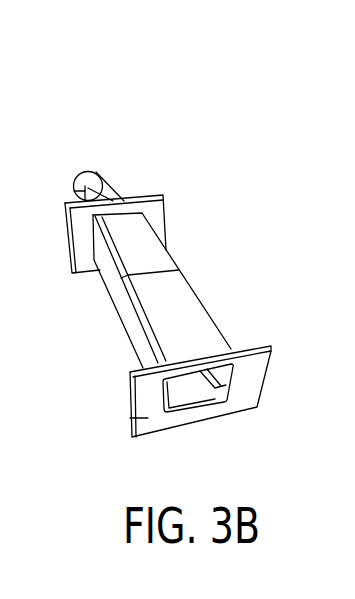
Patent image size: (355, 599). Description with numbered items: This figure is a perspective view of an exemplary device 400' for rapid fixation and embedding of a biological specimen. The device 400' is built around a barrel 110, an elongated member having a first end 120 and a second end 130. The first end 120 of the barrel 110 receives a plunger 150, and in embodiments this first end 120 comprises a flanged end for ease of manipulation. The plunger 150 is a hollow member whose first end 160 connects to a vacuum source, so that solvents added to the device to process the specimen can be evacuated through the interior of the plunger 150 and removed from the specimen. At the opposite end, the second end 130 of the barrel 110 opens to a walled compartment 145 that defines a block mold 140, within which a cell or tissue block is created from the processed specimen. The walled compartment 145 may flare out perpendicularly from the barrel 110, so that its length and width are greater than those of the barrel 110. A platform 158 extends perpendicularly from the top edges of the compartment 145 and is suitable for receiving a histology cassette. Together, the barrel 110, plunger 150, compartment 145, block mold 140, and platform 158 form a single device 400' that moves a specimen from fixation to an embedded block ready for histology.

The device 400' is at (210, 90).
The barrel 110 is at (190, 284).
The first end of the barrel 120 is at (167, 200).
The second end of the barrel 130 is at (230, 347).
The block mold 140 is at (193, 407).
The walled compartment 145 is at (237, 384).
The plunger 150 is at (117, 178).
The platform 158 is at (128, 422).
The first end of the plunger 160 is at (93, 172).